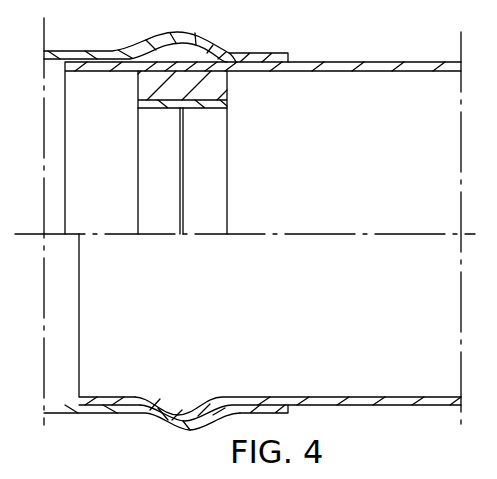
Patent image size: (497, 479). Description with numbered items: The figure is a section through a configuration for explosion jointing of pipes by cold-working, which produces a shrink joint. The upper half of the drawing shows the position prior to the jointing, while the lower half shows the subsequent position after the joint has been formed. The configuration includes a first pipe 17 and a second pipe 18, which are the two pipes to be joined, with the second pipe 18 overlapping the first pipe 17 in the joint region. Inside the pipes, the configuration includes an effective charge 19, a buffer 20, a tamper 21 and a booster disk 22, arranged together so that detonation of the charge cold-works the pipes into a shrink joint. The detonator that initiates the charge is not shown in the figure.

The first pipe 17 is at (386, 67).
The second pipe 18 is at (72, 55).
The effective charge 19 is at (202, 87).
The buffer 20 is at (138, 76).
The tamper 21 is at (228, 104).
The booster disk 22 is at (183, 197).